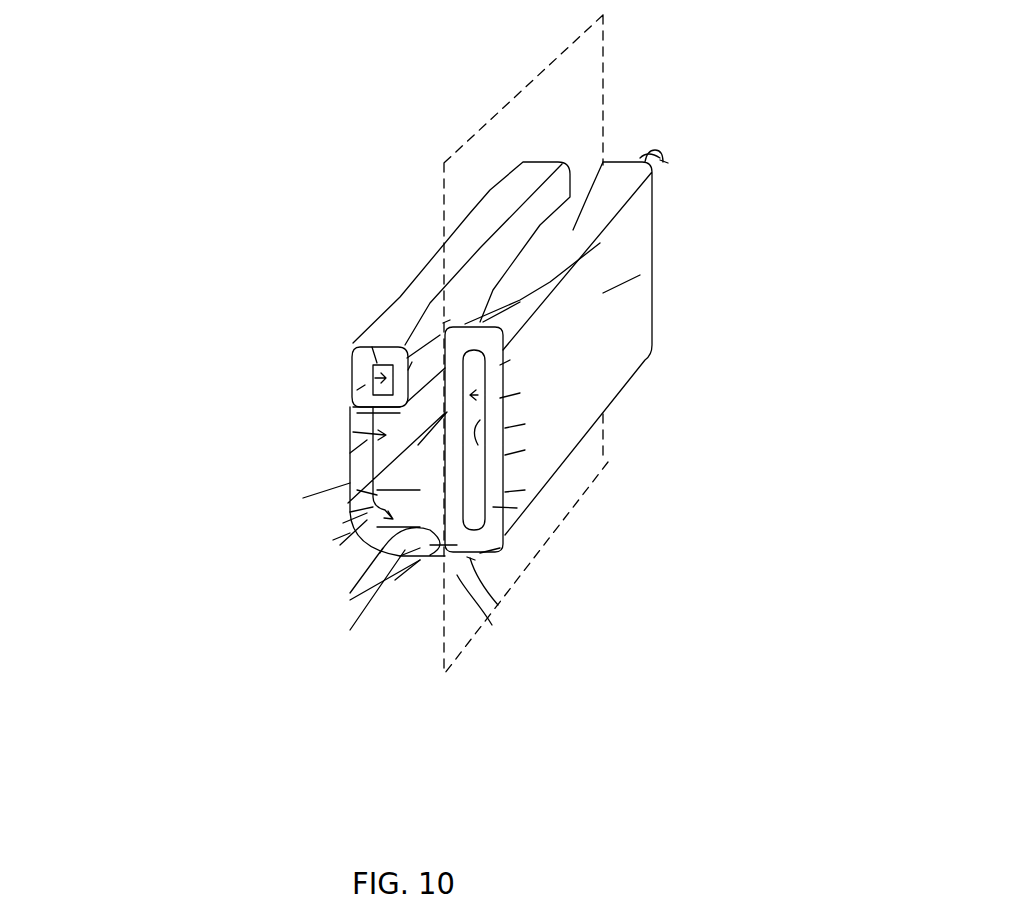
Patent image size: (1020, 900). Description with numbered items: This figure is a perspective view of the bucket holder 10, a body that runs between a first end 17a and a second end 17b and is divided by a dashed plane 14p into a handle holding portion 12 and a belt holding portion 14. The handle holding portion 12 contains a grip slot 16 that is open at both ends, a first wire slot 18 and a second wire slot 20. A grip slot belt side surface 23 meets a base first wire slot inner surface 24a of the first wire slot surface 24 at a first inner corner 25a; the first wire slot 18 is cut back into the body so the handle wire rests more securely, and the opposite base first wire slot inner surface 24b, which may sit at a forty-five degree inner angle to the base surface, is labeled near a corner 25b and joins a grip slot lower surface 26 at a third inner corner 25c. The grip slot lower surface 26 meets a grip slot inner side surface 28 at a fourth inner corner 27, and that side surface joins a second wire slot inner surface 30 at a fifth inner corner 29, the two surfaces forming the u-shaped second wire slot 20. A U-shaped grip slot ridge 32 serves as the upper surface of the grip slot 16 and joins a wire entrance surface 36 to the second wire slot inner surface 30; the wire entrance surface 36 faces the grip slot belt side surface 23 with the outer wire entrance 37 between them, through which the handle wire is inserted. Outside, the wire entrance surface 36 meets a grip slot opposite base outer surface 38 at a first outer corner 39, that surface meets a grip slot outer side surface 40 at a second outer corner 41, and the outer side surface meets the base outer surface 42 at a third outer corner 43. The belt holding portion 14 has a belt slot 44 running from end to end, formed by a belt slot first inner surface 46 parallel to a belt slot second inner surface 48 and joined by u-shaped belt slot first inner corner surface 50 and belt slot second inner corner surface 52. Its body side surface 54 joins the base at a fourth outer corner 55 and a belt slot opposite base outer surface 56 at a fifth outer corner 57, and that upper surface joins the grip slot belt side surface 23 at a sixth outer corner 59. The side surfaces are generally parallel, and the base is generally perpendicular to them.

The bucket holder 10 is at (483, 680).
The handle holding portion 12 is at (403, 610).
The belt holding portion 14 is at (561, 411).
The dashed plane 14p is at (574, 95).
The grip slot 16 is at (350, 453).
The first end 17a is at (490, 475).
The second end 17b is at (542, 157).
The first wire slot 18 is at (525, 490).
The second wire slot 20 is at (357, 390).
The grip slot belt side surface 23 is at (647, 423).
The first wire slot surface 24 is at (297, 708).
The base first wire slot inner surface 24a is at (340, 545).
The opposite base first wire slot inner surface 24b is at (395, 580).
The first inner corner 25a is at (500, 548).
The mounting hole 25b is at (400, 556).
The third inner corner 25c is at (343, 523).
The grip slot lower surface 26 is at (350, 512).
The fourth inner corner 27 is at (357, 490).
The grip slot inner side surface 28 is at (357, 413).
The fifth inner corner 29 is at (377, 363).
The second wire slot inner surface 30 is at (353, 395).
The grip slot ridge 32 is at (353, 407).
The wire entrance surface 36 is at (600, 243).
The outer wire entrance 37 is at (585, 170).
The grip slot opposite base outer surface 38 is at (487, 215).
The first outer corner 39 is at (412, 362).
The grip slot outer side surface 40 is at (353, 432).
The second outer corner 41 is at (352, 347).
The base outer surface 42 is at (583, 588).
The third outer corner 43 is at (333, 540).
The belt slot 44 is at (505, 382).
The belt slot first inner surface 46 is at (525, 424).
The belt slot second inner surface 48 is at (520, 393).
The belt slot first inner corner surface 50 is at (517, 508).
The belt slot second inner corner surface 52 is at (510, 360).
The body side surface 54 is at (603, 293).
The fourth outer corner 55 is at (467, 557).
The belt slot opposite base outer surface 56 is at (668, 163).
The fifth outer corner 57 is at (520, 302).
The sixth outer corner 59 is at (443, 323).